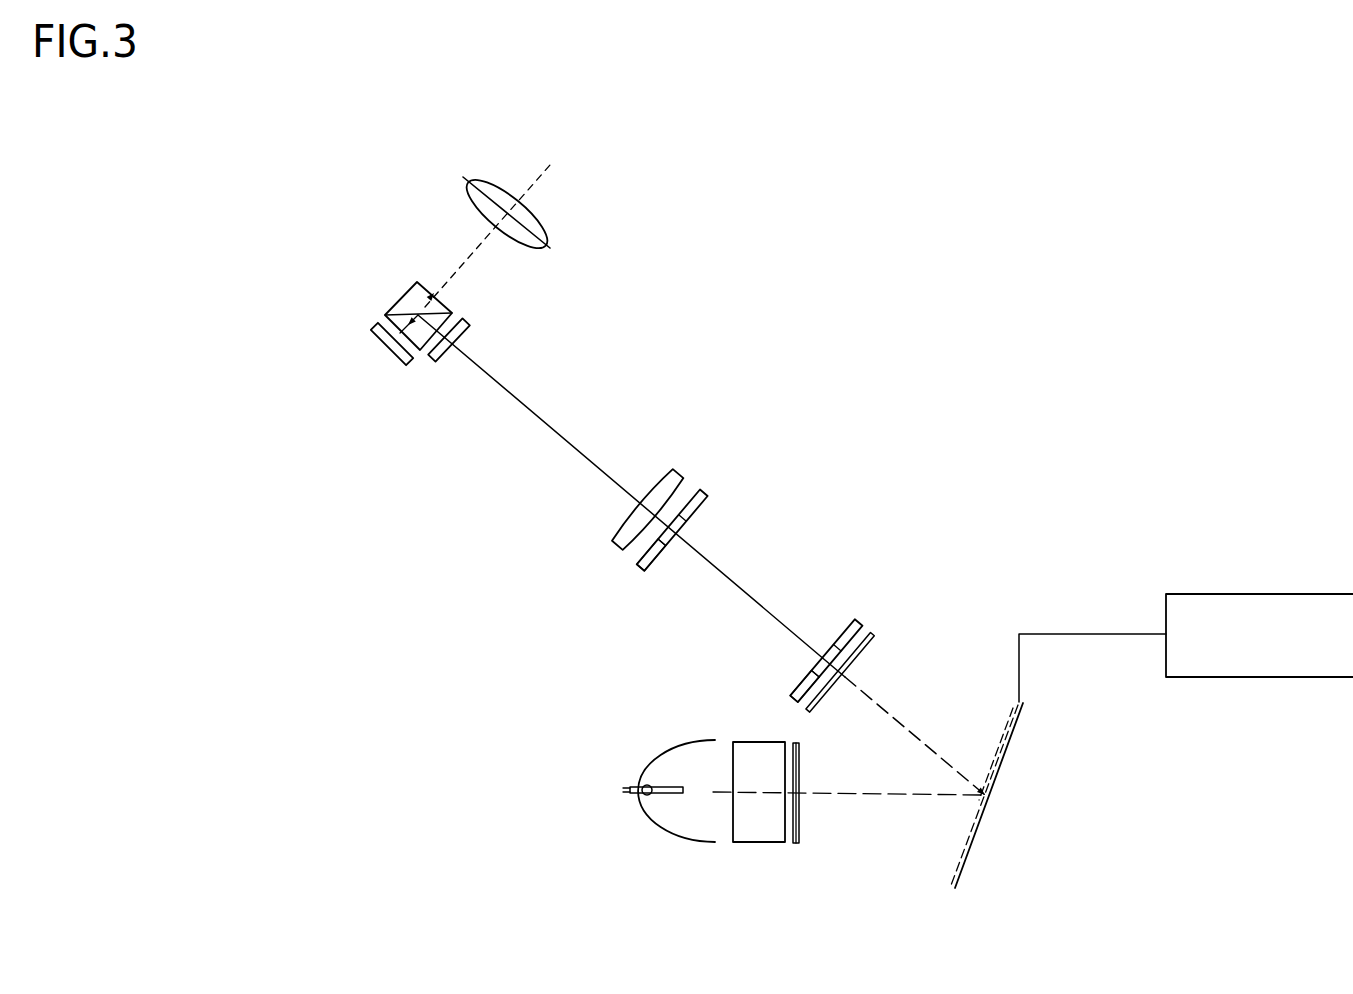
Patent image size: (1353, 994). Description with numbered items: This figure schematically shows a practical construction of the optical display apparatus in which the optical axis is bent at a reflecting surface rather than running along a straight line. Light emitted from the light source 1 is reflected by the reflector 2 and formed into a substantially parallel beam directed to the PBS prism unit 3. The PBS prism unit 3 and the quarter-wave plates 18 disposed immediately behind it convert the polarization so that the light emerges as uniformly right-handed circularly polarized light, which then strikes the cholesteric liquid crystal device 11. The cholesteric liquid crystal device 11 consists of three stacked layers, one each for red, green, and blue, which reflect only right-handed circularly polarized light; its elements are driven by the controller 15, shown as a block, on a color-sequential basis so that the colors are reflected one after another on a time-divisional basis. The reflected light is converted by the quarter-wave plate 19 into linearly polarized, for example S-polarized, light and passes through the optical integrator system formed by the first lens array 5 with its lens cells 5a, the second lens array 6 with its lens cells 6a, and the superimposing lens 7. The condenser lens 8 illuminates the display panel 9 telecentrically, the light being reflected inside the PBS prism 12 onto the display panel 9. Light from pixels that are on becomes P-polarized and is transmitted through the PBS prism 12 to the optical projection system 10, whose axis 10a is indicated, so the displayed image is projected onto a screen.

The light source 1 is at (640, 780).
The reflector 2 is at (658, 757).
The PBS prism unit 3 is at (766, 835).
The first lens array 5 is at (857, 616).
The lens cells 5a is at (797, 688).
The second lens array 6 is at (715, 488).
The lens cells 6a is at (651, 568).
The superimposing lens 7 is at (677, 470).
The condenser lens 8 is at (466, 330).
The display panel 9 is at (382, 338).
The optical projection system 10 is at (513, 238).
The sample axis 10a is at (555, 250).
The cholesteric liquid crystal device 11 is at (1006, 777).
The PBS prism 12 is at (393, 306).
The controller 15 is at (1228, 594).
The quarter-wave plates 18 is at (800, 835).
The quarter-wave plate 19 is at (873, 633).